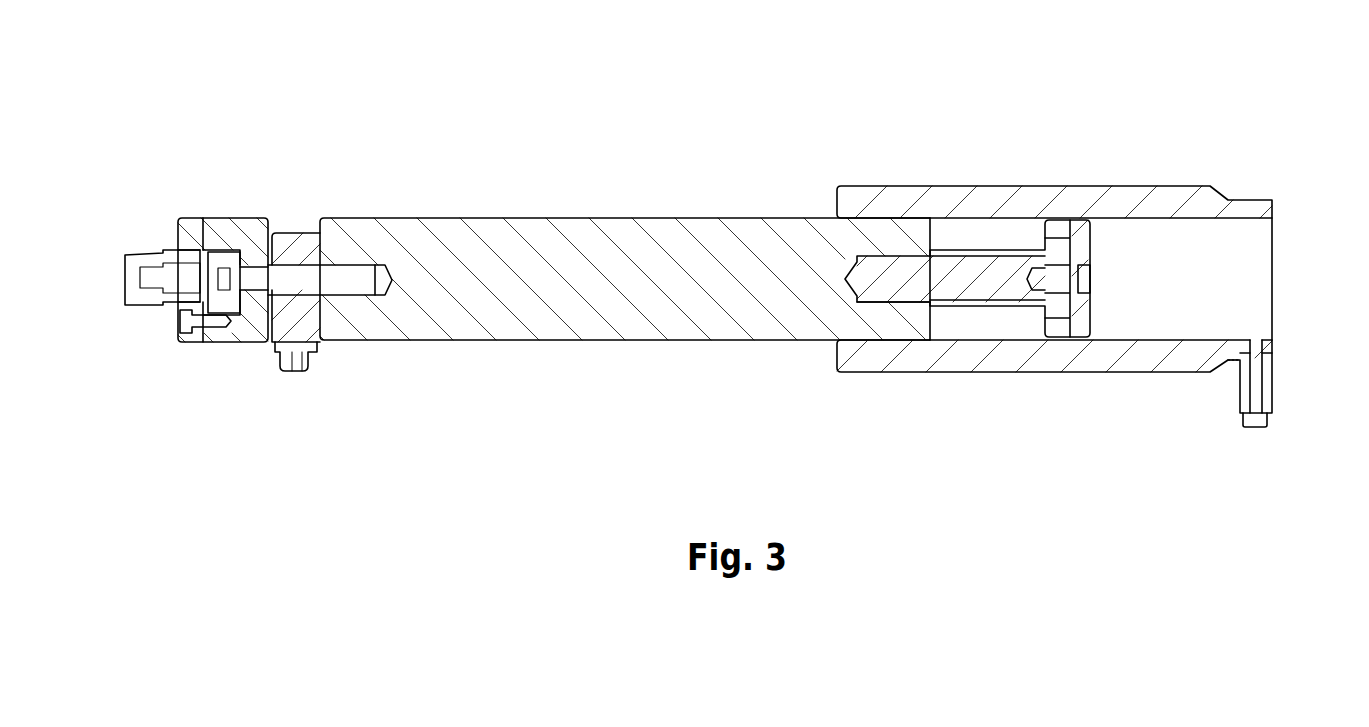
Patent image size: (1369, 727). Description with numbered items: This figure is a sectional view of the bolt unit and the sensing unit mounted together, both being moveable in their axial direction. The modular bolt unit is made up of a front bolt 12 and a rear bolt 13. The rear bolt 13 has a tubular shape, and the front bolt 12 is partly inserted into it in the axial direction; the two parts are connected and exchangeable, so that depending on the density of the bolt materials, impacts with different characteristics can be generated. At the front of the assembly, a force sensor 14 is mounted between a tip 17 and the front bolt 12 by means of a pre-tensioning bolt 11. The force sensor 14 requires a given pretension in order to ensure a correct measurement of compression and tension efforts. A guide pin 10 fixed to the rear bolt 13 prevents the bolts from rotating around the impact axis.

The guide pin 10 is at (1256, 356).
The pre-tensioning bolt 11 is at (297, 268).
The front bolt 12 is at (510, 217).
The rear bolt 13 is at (903, 182).
The force sensor 14 is at (312, 350).
The tip 17 is at (147, 252).